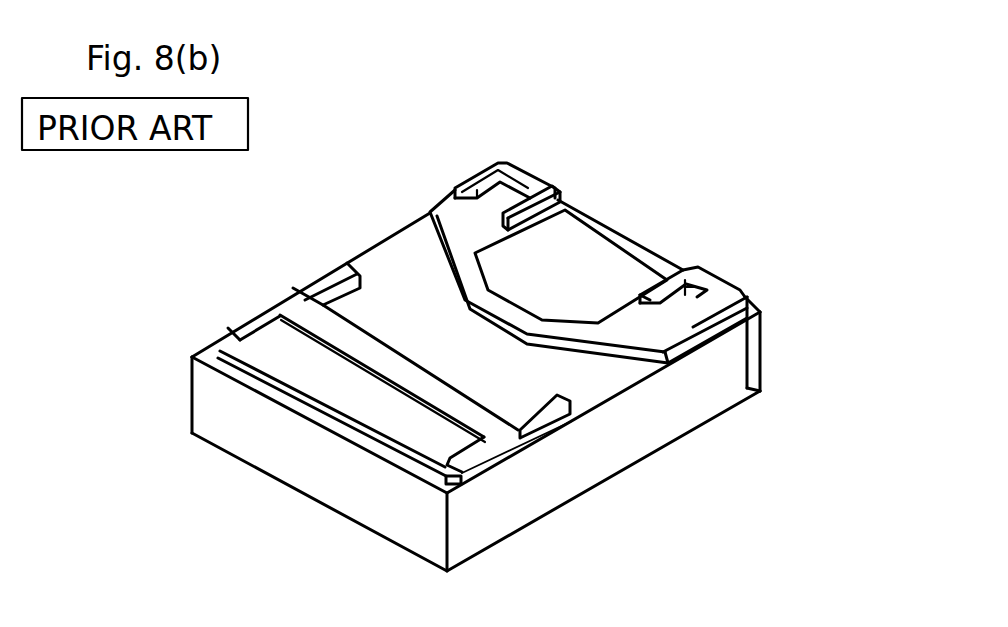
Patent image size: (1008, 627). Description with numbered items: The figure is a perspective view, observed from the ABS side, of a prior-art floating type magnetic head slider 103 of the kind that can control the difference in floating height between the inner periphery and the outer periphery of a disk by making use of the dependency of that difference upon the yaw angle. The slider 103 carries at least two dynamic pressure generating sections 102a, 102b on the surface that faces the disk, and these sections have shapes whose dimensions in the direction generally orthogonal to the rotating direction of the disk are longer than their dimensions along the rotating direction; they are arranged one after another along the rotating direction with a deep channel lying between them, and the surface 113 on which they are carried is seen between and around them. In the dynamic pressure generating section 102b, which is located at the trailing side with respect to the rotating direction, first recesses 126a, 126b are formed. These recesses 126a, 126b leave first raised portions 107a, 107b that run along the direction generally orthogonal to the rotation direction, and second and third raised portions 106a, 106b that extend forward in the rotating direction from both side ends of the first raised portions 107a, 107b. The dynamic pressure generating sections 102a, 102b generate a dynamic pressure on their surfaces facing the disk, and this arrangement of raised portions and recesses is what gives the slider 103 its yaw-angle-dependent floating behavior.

The head slider 103 is at (630, 597).
The substrate top surface 113 is at (437, 278).
The dynamic pressure generating section 102a is at (223, 340).
The dynamic pressure generating section 102b is at (430, 210).
The second raised portion 106a is at (708, 285).
The third raised portion 106b is at (557, 190).
The first raised portion 107a is at (745, 297).
The first raised portion 107b is at (523, 180).
The first recess 126a is at (685, 303).
The first recess 126b is at (492, 202).